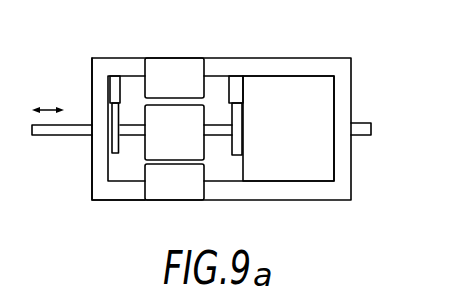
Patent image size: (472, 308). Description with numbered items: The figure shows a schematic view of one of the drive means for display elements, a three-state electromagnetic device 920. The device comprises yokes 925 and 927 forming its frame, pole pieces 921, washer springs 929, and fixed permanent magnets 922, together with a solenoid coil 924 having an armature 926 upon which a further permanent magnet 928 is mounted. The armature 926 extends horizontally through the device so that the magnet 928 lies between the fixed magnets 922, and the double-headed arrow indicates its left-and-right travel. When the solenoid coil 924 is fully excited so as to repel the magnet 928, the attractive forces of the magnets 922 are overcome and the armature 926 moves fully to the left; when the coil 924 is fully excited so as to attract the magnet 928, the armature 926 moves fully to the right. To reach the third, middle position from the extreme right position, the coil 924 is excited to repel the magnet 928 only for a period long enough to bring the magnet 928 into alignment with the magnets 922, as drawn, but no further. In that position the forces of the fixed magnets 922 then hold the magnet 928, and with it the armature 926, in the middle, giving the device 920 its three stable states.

The three-state electromagnetic device 920 is at (233, 132).
The pole pieces 921 is at (113, 76).
The fixed permanent magnets 922 is at (177, 67).
The solenoid coil 924 is at (301, 83).
The yoke 925 is at (316, 194).
The armature 926 is at (82, 125).
The yoke 927 is at (122, 196).
The further permanent magnet 928 is at (155, 147).
The washer springs 929 is at (115, 101).